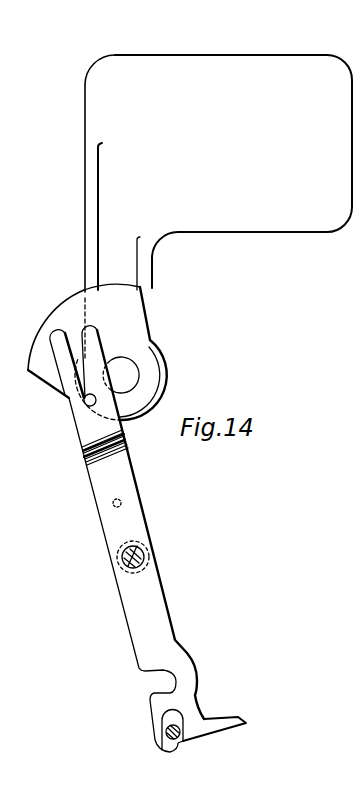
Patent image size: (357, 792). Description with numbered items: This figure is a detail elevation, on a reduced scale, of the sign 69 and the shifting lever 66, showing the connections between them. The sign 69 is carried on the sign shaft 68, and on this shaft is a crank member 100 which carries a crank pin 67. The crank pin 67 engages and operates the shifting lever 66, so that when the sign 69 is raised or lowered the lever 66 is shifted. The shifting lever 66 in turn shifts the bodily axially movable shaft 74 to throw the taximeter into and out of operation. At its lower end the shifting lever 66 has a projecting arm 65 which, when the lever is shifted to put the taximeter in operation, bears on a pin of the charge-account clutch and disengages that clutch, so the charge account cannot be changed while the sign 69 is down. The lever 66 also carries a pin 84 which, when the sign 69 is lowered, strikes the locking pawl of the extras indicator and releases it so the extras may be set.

The sign 69 is at (218, 207).
The crank member 100 is at (135, 307).
The sign shaft 68 is at (131, 372).
The crank pin 67 is at (83, 402).
The pin 84 is at (113, 503).
The shifting lever 66 is at (86, 452).
The projecting arm 65 is at (227, 727).
The axially movable shaft 74 is at (168, 736).